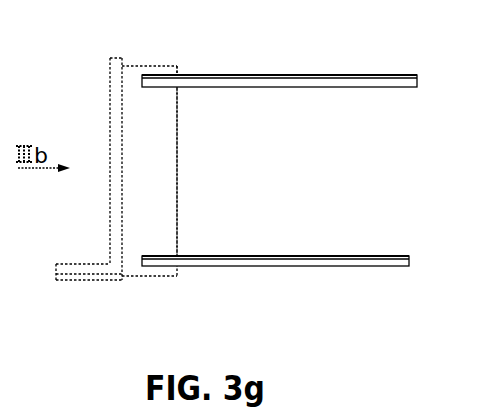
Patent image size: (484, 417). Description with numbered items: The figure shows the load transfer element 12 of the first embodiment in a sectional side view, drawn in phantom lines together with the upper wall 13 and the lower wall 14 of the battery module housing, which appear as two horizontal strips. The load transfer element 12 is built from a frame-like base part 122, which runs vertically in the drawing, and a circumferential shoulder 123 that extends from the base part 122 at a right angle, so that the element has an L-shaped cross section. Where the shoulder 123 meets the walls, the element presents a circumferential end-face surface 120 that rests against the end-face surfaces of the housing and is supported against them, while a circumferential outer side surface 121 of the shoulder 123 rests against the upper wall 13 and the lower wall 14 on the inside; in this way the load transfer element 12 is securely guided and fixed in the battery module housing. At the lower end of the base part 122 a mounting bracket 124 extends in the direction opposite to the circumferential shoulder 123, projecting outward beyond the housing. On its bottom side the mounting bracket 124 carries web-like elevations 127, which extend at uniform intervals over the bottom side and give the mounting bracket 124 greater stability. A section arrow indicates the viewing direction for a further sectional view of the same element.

The load transfer element 12 is at (90, 63).
The circumferential end-face surface 120 is at (139, 78).
The circumferential outer side surface 121 is at (172, 65).
The frame-like base part 122 is at (112, 104).
The circumferential shoulder 123 is at (162, 118).
The mounting bracket 124 is at (71, 270).
The web-like elevations 127 is at (72, 283).
The upper wall 13 is at (397, 76).
The lower wall 14 is at (396, 259).